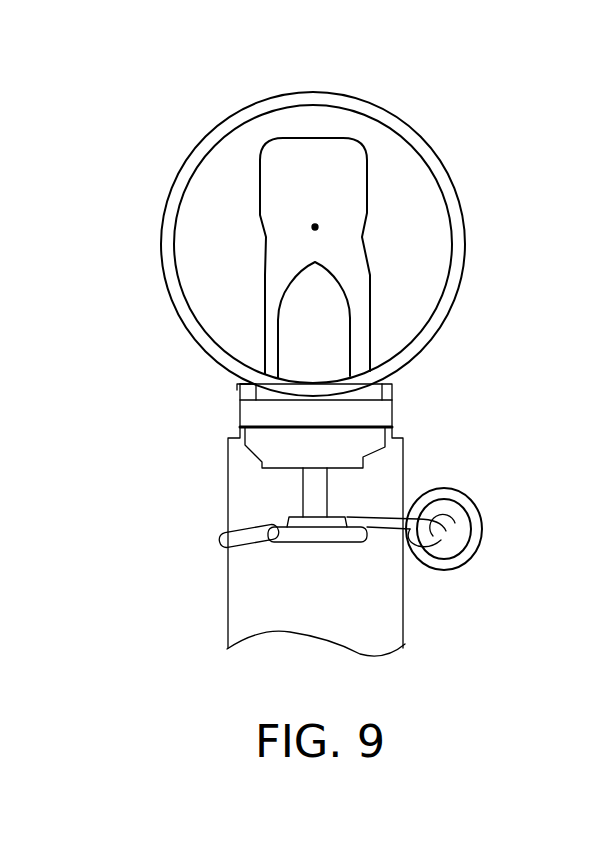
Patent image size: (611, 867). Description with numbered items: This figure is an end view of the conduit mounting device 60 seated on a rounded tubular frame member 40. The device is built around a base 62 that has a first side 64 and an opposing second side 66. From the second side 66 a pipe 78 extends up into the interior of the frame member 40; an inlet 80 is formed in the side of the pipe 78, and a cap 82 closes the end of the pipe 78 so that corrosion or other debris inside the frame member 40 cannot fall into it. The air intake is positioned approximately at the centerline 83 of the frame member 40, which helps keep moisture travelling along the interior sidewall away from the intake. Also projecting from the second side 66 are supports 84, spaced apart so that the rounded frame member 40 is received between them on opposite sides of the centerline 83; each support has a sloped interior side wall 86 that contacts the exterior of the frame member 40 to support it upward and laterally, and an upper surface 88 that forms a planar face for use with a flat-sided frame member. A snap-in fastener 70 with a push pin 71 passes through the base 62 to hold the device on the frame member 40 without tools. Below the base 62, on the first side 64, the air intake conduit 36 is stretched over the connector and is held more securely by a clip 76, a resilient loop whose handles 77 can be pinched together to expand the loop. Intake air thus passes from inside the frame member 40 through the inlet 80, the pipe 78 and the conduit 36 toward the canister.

The air intake conduit 36 is at (404, 625).
The frame member 40 is at (347, 92).
The conduit mounting device 60 is at (142, 584).
The base 62 is at (392, 412).
The first side 64 is at (403, 437).
The second side 66 is at (395, 392).
The fastener 70 is at (350, 318).
The push pin 71 is at (333, 543).
The clip 76 is at (220, 540).
The handles 77 is at (466, 556).
The pipe 78 is at (278, 172).
The inlet 80 is at (260, 232).
The cap 82 is at (293, 143).
The centerline 83 is at (315, 227).
The supports 84 is at (240, 391).
The side wall 86 is at (240, 400).
The upper surface 88 is at (238, 377).